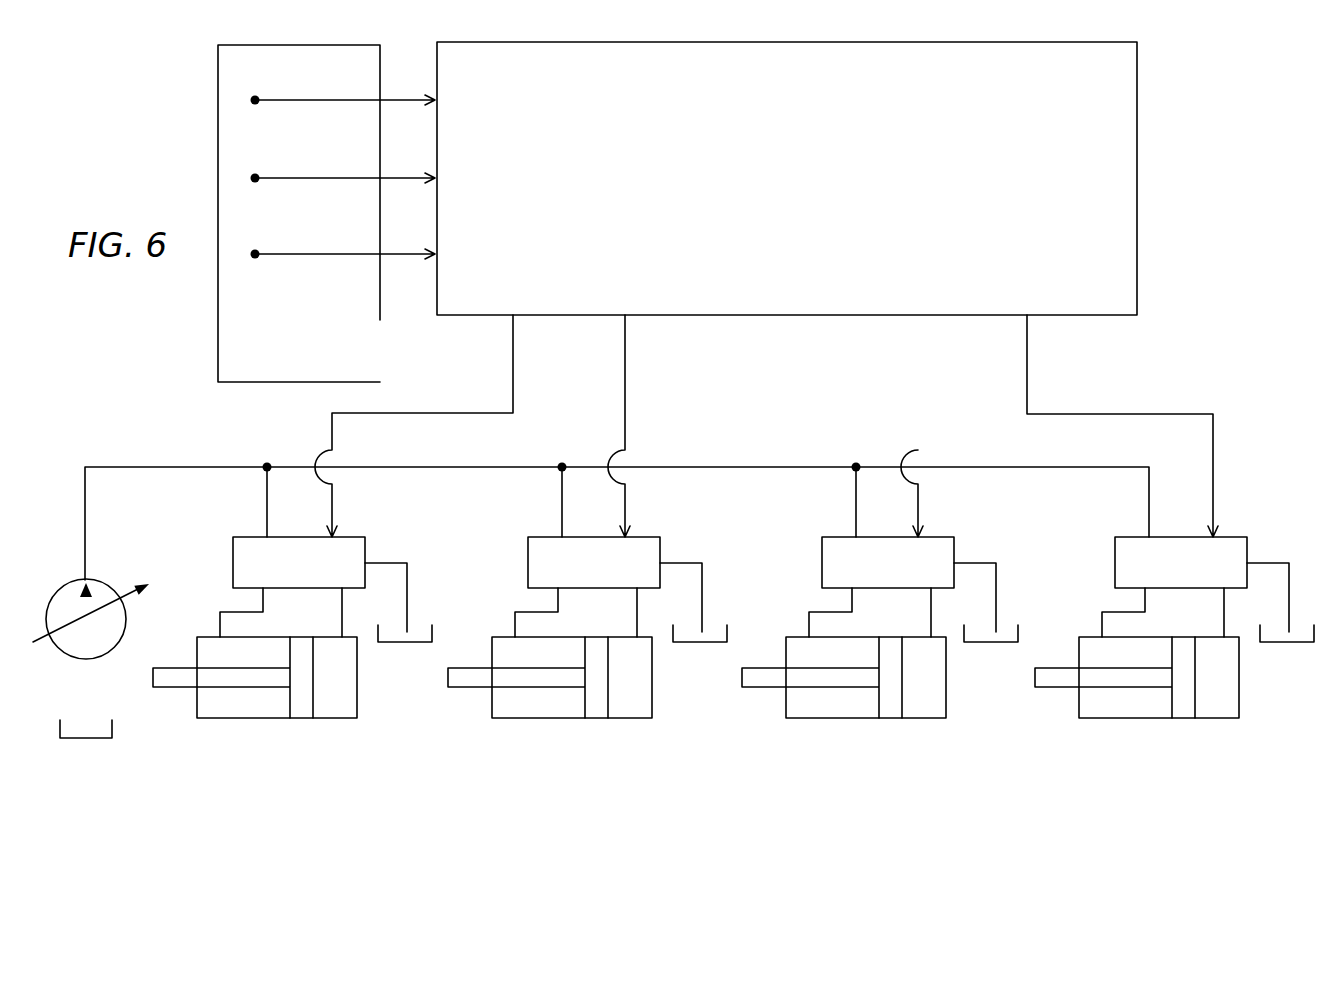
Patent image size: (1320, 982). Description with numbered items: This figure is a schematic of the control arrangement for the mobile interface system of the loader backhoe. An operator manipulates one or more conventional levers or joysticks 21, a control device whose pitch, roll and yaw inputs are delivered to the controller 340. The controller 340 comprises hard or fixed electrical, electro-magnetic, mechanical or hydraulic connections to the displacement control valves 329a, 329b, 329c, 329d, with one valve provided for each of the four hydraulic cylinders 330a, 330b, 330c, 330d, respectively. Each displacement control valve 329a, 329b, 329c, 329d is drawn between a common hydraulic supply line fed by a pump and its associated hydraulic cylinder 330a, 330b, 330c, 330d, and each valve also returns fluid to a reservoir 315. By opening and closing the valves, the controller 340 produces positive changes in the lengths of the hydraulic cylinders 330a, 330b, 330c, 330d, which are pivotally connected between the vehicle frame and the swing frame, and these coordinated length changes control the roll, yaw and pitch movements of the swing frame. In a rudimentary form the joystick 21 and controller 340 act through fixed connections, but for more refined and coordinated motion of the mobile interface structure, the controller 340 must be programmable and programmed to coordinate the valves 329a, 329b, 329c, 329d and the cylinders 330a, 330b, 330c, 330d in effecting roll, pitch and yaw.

The lever or joystick 21 is at (288, 368).
The controller 340 is at (762, 215).
The displacement control valve 329a is at (275, 574).
The displacement control valve 329b is at (608, 552).
The displacement control valve 329c is at (902, 552).
The displacement control valve 329d is at (1195, 587).
The hydraulic cylinder 330a is at (270, 718).
The hydraulic cylinder 330b is at (550, 711).
The hydraulic cylinder 330c is at (844, 711).
The hydraulic cylinder 330d is at (1137, 711).
The hydraulic fluid reservoir 315 is at (97, 738).